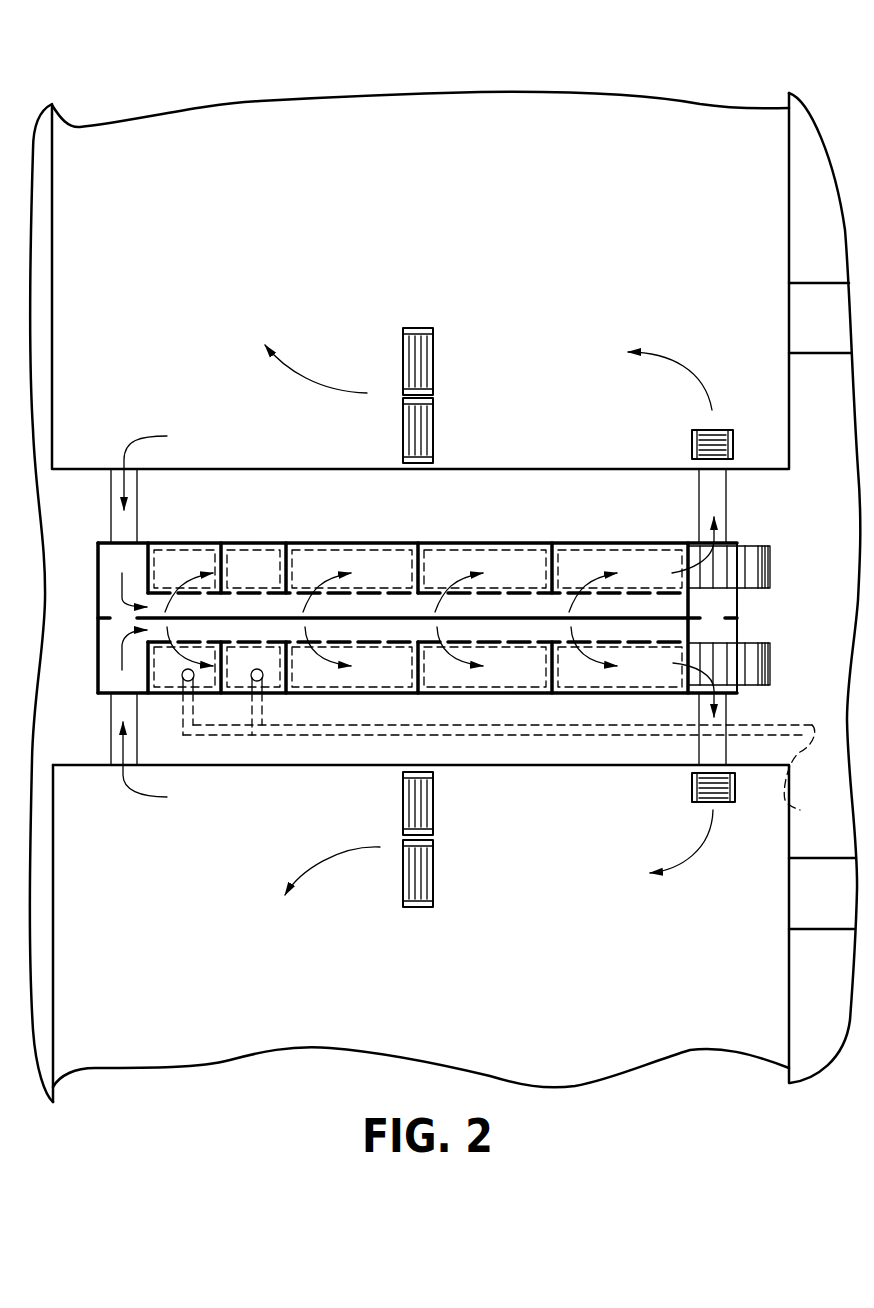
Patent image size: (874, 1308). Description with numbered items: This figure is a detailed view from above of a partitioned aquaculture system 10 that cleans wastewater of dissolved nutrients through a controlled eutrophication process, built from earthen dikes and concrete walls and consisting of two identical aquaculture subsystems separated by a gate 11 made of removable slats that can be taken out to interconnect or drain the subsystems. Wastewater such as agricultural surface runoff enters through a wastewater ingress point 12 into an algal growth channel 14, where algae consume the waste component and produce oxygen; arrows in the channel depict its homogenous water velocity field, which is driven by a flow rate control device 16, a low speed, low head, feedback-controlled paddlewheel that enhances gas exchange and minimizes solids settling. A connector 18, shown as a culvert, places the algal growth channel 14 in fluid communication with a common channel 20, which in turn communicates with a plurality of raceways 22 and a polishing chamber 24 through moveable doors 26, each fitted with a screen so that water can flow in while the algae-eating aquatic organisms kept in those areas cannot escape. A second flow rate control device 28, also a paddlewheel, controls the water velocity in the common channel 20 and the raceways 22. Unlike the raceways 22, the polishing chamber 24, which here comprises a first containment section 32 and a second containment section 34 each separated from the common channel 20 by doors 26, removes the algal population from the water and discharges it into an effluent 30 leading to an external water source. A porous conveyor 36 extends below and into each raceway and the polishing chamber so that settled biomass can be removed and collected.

The partitioned aquaculture system 10 is at (628, 72).
The gate 11 is at (126, 618).
The wastewater ingress point 12 is at (818, 928).
The algal growth channel 14 is at (395, 1005).
The flow rate control device 16 is at (428, 863).
The connector 18 is at (115, 757).
The common channel 20 is at (98, 655).
The raceways 22 is at (360, 678).
The polishing chamber 24 is at (237, 693).
The moveable doors 26 is at (200, 625).
The second flow rate control device 28 is at (735, 790).
The effluent 30 is at (795, 808).
The first containment section 32 is at (163, 695).
The second containment section 34 is at (280, 693).
The porous conveyor 36 is at (757, 657).